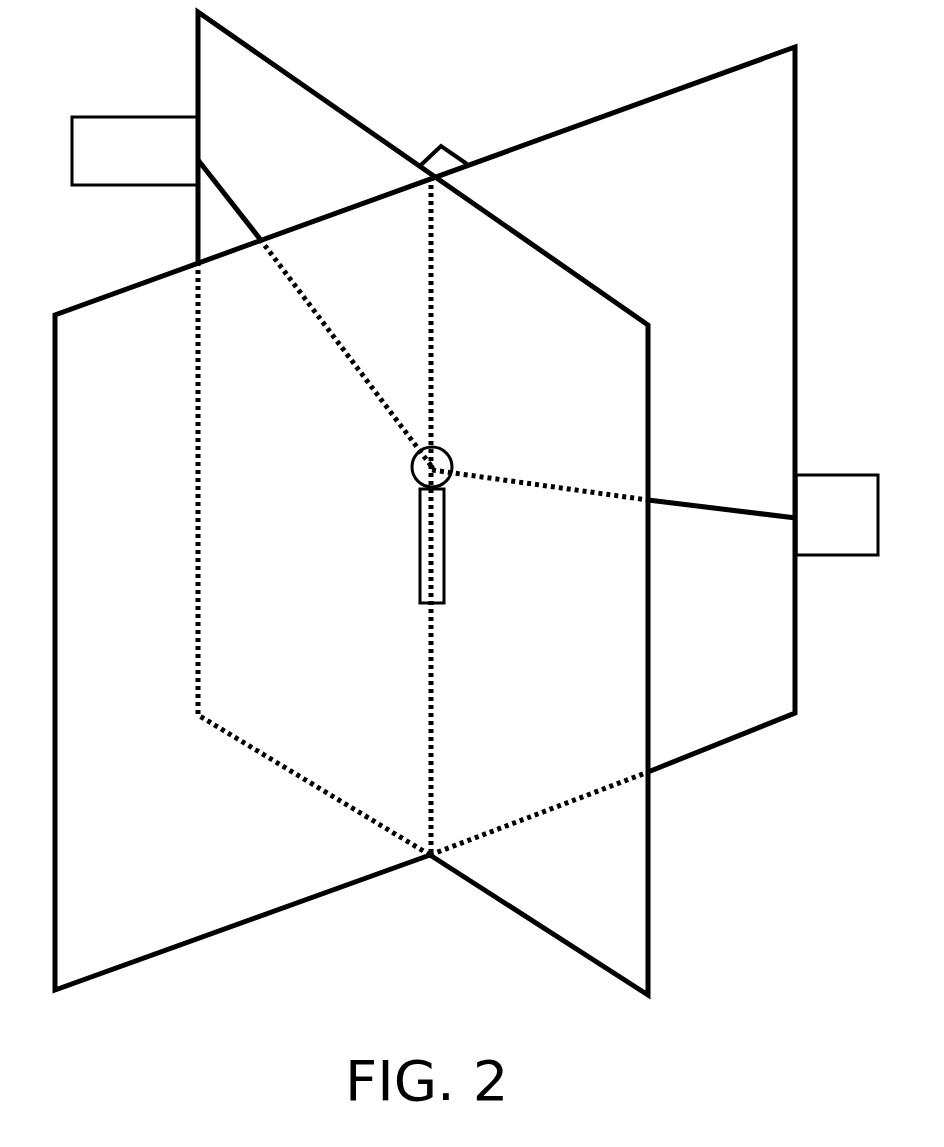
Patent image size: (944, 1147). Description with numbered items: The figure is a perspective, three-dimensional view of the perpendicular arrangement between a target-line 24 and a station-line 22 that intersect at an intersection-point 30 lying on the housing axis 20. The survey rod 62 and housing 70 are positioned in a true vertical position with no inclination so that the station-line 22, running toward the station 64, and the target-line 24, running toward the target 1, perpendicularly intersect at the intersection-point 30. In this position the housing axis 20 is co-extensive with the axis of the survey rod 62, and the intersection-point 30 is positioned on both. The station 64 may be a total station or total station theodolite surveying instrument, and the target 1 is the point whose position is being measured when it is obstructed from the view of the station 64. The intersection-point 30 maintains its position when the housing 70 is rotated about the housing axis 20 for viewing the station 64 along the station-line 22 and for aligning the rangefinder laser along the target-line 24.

The target 1 is at (837, 515).
The housing axis 20 is at (427, 516).
The station-line 22 is at (315, 313).
The target-line 24 is at (614, 488).
The intersection-point 30 is at (430, 470).
The survey rod 62 is at (445, 550).
The station 64 is at (135, 151).
The housing 70 is at (448, 455).